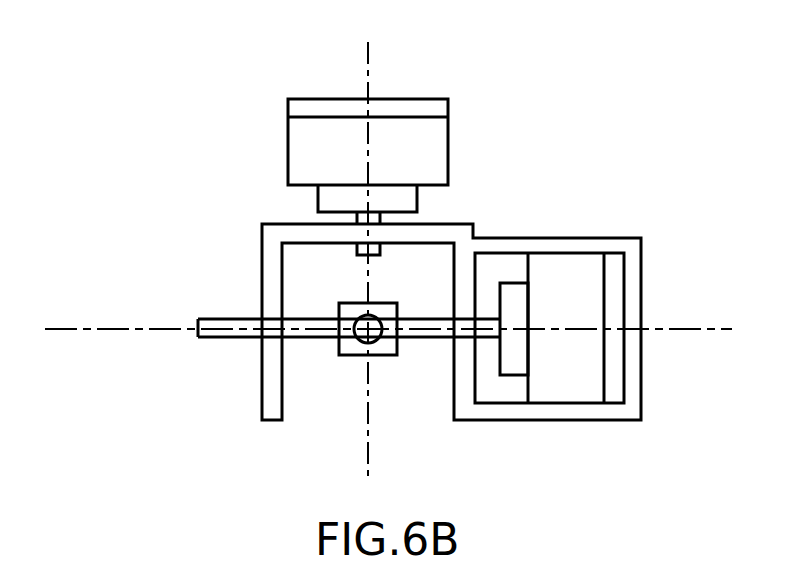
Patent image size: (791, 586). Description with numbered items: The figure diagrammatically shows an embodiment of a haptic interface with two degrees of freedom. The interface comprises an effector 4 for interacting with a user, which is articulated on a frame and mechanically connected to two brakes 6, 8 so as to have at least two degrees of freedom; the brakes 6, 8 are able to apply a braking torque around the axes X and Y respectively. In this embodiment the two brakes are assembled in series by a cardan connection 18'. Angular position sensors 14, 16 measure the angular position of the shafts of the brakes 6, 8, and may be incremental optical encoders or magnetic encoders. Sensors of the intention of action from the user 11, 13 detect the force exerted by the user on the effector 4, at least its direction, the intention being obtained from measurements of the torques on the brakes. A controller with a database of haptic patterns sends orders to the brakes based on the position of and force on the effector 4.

The effector 4 is at (363, 343).
The brake 6 is at (298, 139).
The brake 8 is at (558, 260).
The sensor of the intention of action from the user 11 is at (437, 108).
The sensor of the intention of action from the user 13 is at (614, 262).
The angular position sensor 14 is at (330, 201).
The angular position sensor 16 is at (513, 293).
The cardan connection 18' is at (451, 361).